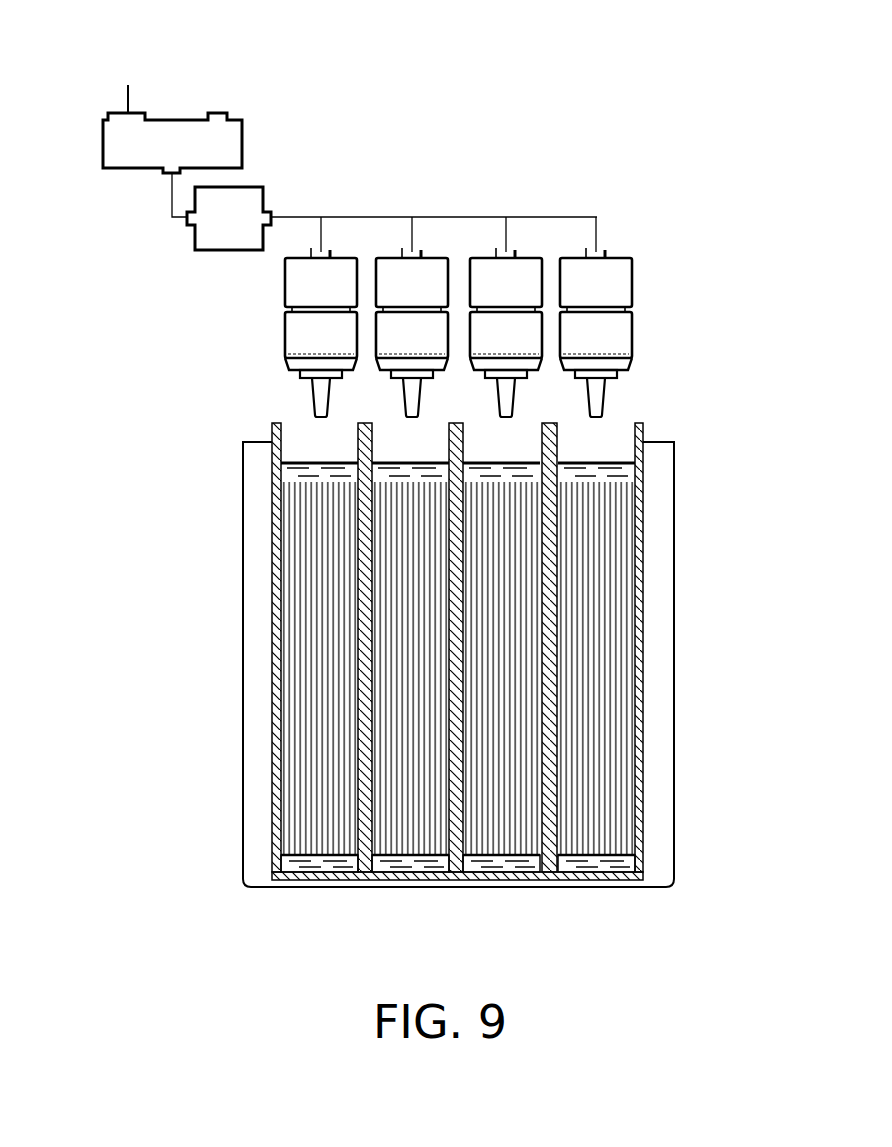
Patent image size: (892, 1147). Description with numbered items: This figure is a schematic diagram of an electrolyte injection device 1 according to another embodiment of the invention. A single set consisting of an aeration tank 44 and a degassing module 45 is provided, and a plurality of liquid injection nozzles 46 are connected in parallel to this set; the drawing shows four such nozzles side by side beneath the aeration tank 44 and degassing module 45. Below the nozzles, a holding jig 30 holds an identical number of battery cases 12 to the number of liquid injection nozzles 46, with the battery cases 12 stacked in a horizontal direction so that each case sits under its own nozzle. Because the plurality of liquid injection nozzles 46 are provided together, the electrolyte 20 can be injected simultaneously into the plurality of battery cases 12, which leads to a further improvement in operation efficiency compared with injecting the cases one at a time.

The electrolyte injection device 1 is at (478, 84).
The battery case 12 is at (548, 443).
The electrolyte 20 is at (285, 477).
The holding jig 30 is at (663, 593).
The aeration tank 44 is at (250, 137).
The degassing module 45 is at (270, 198).
The liquid injection nozzle 46 is at (529, 268).